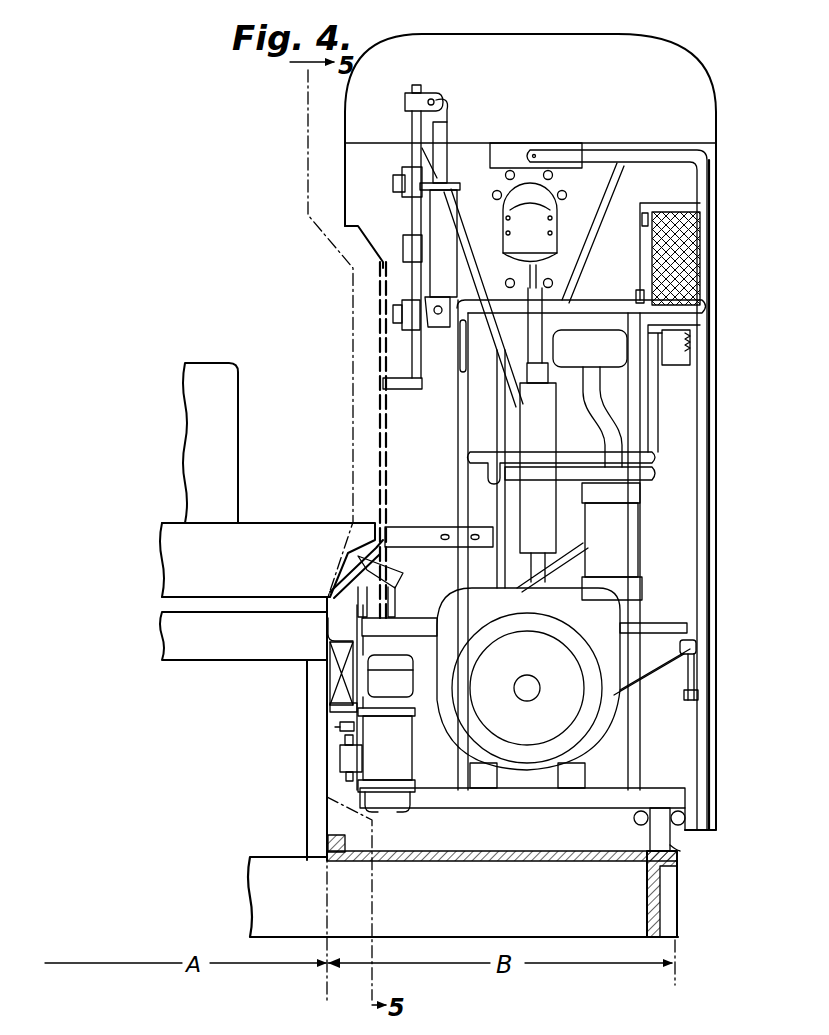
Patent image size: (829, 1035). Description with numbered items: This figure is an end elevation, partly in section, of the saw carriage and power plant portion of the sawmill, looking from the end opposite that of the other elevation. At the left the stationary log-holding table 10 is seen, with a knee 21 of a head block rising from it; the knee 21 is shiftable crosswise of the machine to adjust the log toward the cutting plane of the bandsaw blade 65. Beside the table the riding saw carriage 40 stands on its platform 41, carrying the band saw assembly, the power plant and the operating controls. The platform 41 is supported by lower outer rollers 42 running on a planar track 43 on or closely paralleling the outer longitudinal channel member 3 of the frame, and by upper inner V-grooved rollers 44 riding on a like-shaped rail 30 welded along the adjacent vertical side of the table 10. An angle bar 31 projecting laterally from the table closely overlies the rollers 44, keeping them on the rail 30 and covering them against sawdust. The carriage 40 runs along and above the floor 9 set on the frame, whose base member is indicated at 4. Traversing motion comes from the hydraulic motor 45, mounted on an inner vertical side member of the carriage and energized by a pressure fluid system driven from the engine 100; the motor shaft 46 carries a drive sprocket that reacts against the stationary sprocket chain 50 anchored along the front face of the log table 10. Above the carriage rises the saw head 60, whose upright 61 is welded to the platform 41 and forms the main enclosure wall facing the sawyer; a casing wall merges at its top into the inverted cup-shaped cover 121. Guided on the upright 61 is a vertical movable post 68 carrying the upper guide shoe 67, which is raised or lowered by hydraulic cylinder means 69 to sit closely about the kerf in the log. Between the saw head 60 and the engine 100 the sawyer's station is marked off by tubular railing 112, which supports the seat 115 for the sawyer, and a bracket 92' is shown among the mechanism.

The inverted cup-shaped cover 121 is at (632, 34).
The saw head 60 is at (346, 176).
The upright 61 is at (686, 180).
The bandsaw blade 65 is at (387, 453).
The movable post 68 is at (412, 214).
The upper guide shoe 67 is at (386, 390).
The hydraulic cylinder means 69 is at (440, 235).
The bracket 92' is at (559, 233).
The tubular railing 112 is at (588, 311).
The seat 115 is at (580, 462).
The knee 21 is at (232, 427).
The log-holding table 10 is at (137, 554).
The angle bar 31 is at (330, 630).
The V-grooved roller 44 is at (335, 663).
The rail 30 is at (332, 706).
The stationary sprocket chain 50 is at (336, 723).
The motor shaft 46 is at (336, 752).
The hydraulic motor 45 is at (400, 744).
The engine 100 is at (607, 688).
The platform 41 is at (444, 797).
The saw carriage 40 is at (500, 815).
The lower outer roller 42 is at (648, 840).
The planar track 43 is at (678, 850).
The floor 9 is at (487, 860).
The outer longitudinal channel member 3 is at (661, 893).
The base 4 is at (258, 857).